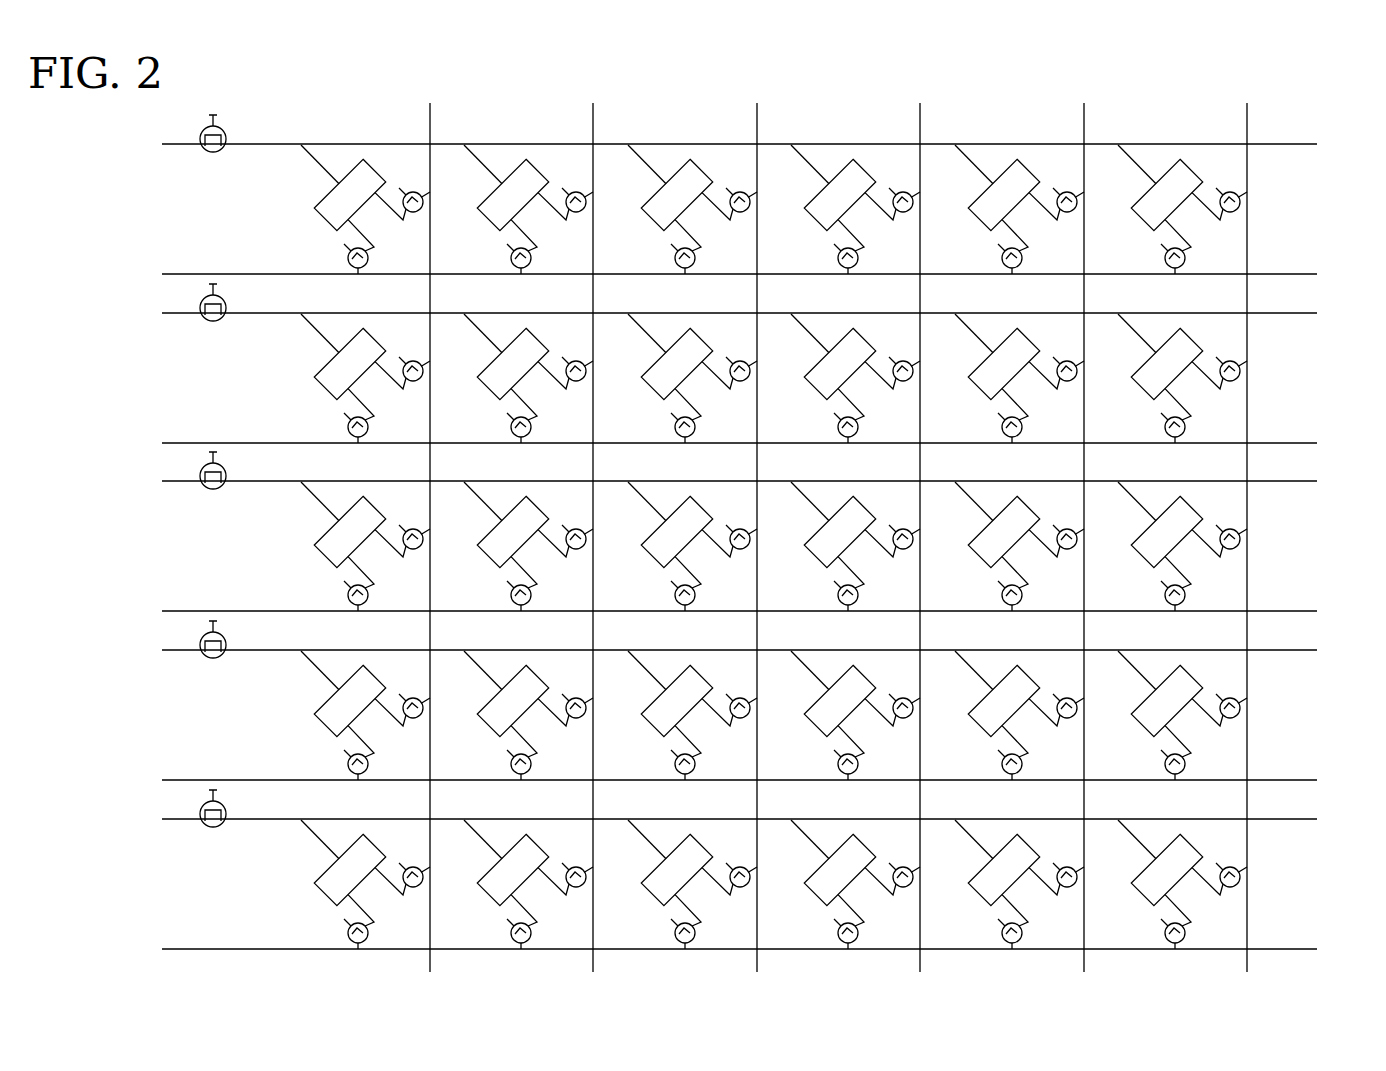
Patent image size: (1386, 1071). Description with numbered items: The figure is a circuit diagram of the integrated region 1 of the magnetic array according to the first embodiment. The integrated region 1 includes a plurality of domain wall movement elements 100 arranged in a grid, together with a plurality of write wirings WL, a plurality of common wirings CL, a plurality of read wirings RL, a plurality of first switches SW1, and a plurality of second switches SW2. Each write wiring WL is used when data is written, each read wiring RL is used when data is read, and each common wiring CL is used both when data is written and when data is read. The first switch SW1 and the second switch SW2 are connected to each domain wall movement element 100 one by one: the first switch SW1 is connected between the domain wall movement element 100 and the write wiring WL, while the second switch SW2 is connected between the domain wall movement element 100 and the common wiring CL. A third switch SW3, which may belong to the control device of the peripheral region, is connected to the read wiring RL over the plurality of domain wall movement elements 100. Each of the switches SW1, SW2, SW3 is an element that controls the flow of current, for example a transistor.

The integrated region 1 is at (1318, 86).
The domain wall movement element 100 is at (330, 192).
The first switch SW1 is at (346, 257).
The second switch SW2 is at (410, 214).
The third switch SW3 is at (213, 153).
The common wiring CL is at (431, 125).
The read wiring RL is at (1293, 144).
The write wiring WL is at (1293, 274).